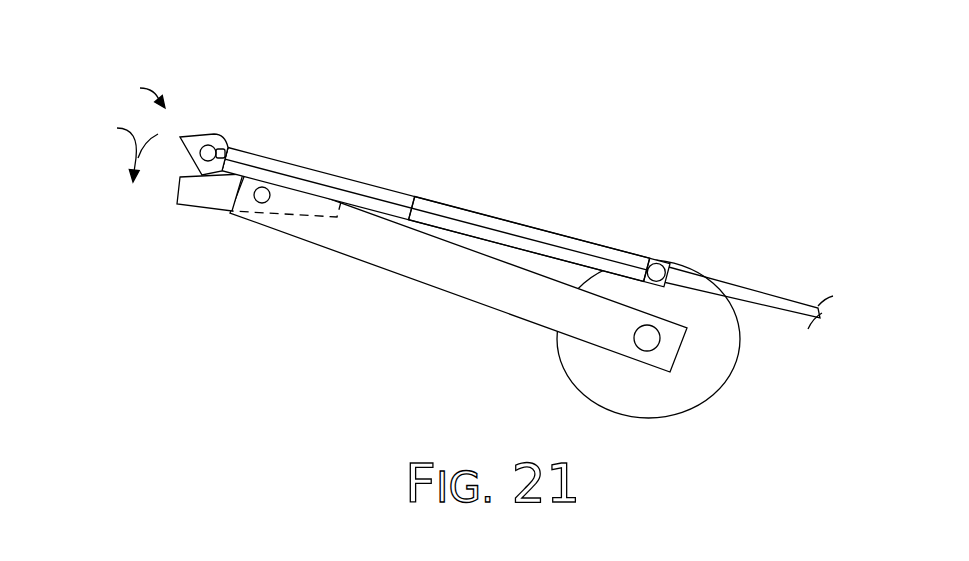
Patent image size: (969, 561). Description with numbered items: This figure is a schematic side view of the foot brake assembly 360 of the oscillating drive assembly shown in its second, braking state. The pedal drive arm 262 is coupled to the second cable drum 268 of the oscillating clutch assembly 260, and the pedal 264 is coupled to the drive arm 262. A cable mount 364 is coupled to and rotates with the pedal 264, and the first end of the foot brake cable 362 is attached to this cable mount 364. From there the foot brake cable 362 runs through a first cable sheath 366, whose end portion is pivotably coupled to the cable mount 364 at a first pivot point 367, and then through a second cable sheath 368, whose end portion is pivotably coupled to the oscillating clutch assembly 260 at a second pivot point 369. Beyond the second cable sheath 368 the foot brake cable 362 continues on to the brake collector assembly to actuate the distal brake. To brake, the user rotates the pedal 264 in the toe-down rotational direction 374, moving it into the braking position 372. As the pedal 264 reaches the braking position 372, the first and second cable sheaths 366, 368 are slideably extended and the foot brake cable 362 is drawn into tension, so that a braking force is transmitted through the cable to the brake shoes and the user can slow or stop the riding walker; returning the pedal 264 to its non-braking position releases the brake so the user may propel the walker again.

The oscillating clutch assembly 260 is at (752, 239).
The pedal drive arm 262 is at (400, 275).
The pedal 264 is at (218, 207).
The second cable drum 268 is at (724, 312).
The foot brake assembly 360 is at (456, 209).
The foot brake cable 362 is at (245, 160).
The cable mount 364 is at (190, 136).
The first cable sheath 366 is at (368, 181).
The first pivot point 367 is at (254, 123).
The second cable sheath 368 is at (552, 230).
The second pivot point 369 is at (677, 231).
The braking position 372 is at (140, 88).
The toe-down rotational direction 374 is at (117, 128).